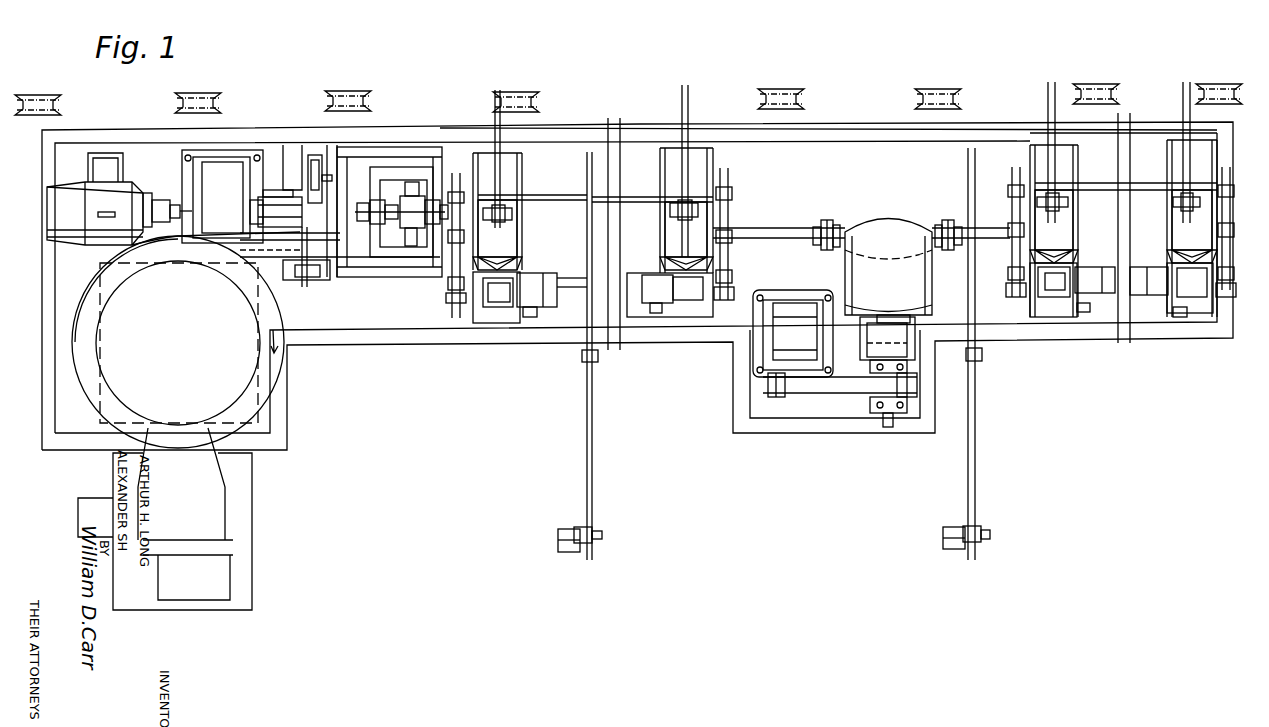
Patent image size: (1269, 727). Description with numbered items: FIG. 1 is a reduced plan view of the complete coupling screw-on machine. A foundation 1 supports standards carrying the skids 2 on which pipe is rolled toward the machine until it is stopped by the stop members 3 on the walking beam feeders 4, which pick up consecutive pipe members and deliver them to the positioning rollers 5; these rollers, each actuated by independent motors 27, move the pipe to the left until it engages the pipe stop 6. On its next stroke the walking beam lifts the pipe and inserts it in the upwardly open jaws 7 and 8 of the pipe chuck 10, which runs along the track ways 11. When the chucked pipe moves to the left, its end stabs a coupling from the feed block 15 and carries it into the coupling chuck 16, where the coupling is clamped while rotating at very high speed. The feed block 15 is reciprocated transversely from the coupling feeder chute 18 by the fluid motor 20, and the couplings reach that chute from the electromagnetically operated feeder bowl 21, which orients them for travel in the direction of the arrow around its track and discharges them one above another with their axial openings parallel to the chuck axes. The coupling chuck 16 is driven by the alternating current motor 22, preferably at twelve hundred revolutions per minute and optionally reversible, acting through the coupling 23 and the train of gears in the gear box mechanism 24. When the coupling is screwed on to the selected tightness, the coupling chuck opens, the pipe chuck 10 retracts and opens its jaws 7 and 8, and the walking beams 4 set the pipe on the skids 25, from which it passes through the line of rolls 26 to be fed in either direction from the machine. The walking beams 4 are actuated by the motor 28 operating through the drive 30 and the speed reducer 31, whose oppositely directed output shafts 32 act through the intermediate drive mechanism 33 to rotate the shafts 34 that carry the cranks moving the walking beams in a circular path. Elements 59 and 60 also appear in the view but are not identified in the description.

The foundation 1 is at (413, 333).
The skids 2 is at (588, 405).
The stop members 3 is at (450, 284).
The walking beam feeders 4 is at (455, 302).
The positioning rollers 5 is at (508, 259).
The pipe stop 6 is at (327, 278).
The jaw 7 is at (393, 218).
The jaw 8 is at (405, 232).
The pipe chuck 10 is at (424, 173).
The track ways 11 is at (395, 153).
The feed block 15 is at (322, 236).
The coupling chuck 16 is at (275, 197).
The coupling feeder chute 18 is at (301, 285).
The fluid motor 20 is at (350, 150).
The feeder bowl 21 is at (207, 320).
The alternating current motor 22 is at (103, 192).
The coupling 23 is at (172, 194).
The gear box mechanism 24 is at (220, 212).
The skids 25 is at (500, 170).
The rolls 26 is at (52, 95).
The independent motors 27 is at (548, 292).
The motor 28 is at (783, 305).
The drive 30 is at (808, 394).
The speed reducer 31 is at (893, 225).
The shafts 32 is at (783, 212).
The intermediate drive mechanism 33 is at (512, 230).
The shafts 34 is at (620, 193).
The piston 59 is at (316, 165).
The fitting 60 is at (332, 178).